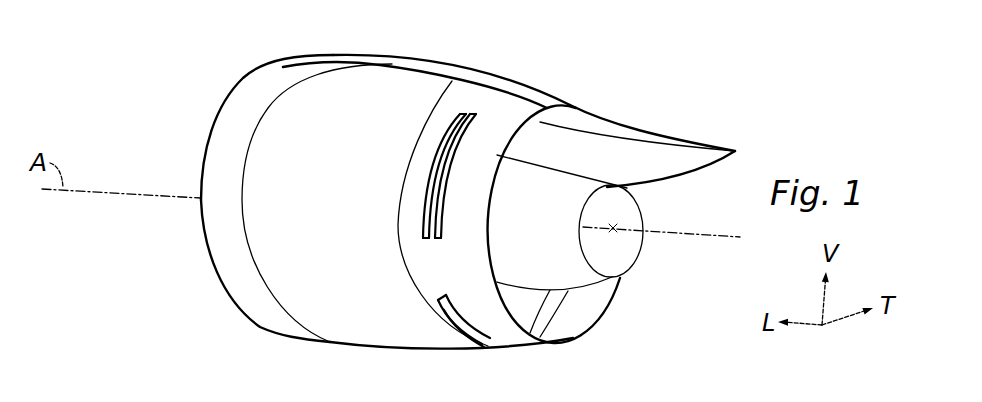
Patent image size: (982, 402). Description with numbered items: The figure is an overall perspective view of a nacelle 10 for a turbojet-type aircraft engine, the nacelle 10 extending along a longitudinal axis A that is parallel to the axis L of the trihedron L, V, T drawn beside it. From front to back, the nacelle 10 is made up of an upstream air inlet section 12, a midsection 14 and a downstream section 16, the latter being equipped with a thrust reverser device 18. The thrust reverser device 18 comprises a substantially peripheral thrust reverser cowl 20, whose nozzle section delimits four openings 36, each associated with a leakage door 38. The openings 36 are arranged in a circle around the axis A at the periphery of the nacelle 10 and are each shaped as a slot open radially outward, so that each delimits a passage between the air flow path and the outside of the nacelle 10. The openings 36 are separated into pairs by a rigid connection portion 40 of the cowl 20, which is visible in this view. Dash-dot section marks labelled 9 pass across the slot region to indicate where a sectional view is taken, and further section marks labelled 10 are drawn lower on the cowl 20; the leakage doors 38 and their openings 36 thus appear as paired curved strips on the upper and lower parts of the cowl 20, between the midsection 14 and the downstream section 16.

The section line 9- 9 is at (492, 178).
The nacelle 10 is at (661, 95).
The upstream air inlet section 12 is at (222, 63).
The midsection 14 is at (345, 41).
The downstream section 16 is at (558, 70).
The thrust reverser device 18 is at (522, 66).
The thrust reverser cowl 20 is at (395, 284).
The openings 36 is at (473, 104).
The leakage door 38 is at (450, 108).
The rigid connection portion 40 is at (423, 268).